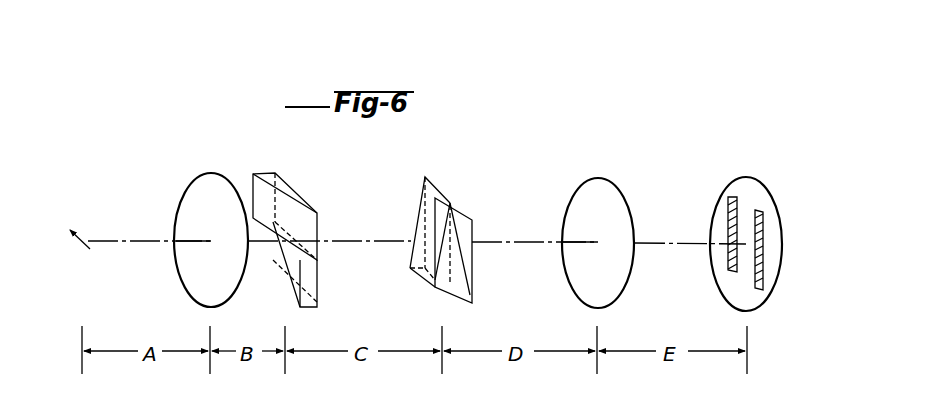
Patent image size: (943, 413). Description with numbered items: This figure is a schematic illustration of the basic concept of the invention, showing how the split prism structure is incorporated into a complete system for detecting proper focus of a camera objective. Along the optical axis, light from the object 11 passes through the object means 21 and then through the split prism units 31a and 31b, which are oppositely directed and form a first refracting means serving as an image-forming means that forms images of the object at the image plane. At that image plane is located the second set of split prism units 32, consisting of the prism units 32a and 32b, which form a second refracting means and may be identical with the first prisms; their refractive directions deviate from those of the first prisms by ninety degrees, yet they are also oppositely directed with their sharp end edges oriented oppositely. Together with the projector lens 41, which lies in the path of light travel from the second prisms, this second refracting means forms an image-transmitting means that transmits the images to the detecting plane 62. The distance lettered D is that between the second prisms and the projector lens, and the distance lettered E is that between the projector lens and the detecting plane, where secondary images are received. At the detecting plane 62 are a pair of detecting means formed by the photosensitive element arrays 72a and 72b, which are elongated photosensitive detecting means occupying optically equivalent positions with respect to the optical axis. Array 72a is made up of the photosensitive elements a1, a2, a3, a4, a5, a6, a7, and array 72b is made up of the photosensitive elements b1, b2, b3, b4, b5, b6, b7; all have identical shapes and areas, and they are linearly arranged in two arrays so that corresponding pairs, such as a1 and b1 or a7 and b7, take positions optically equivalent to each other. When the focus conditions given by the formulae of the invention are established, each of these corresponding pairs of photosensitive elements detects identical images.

The object 11 is at (80, 238).
The object means 21 is at (203, 190).
The split prism unit 31a is at (283, 183).
The split prism unit 31b is at (312, 285).
The second set of split prism units 32 is at (414, 198).
The split prism unit 32a is at (430, 183).
The split prism unit 32b is at (458, 215).
The projector lens 41 is at (587, 197).
The detecting plane 62 is at (753, 186).
The photosensitive element array 72a is at (767, 212).
The photosensitive element array 72b is at (738, 197).
The photosensitive element a1 is at (760, 292).
The photosensitive element a2 is at (763, 268).
The photosensitive element a3 is at (763, 258).
The photosensitive element a4 is at (763, 248).
The photosensitive element a5 is at (763, 238).
The photosensitive element a6 is at (763, 228).
The photosensitive element a7 is at (763, 218).
The photosensitive element b1 is at (731, 268).
The photosensitive element b2 is at (729, 255).
The photosensitive element b3 is at (729, 243).
The photosensitive element b4 is at (729, 232).
The photosensitive element b5 is at (729, 221).
The photosensitive element b6 is at (729, 211).
The photosensitive element b7 is at (730, 202).